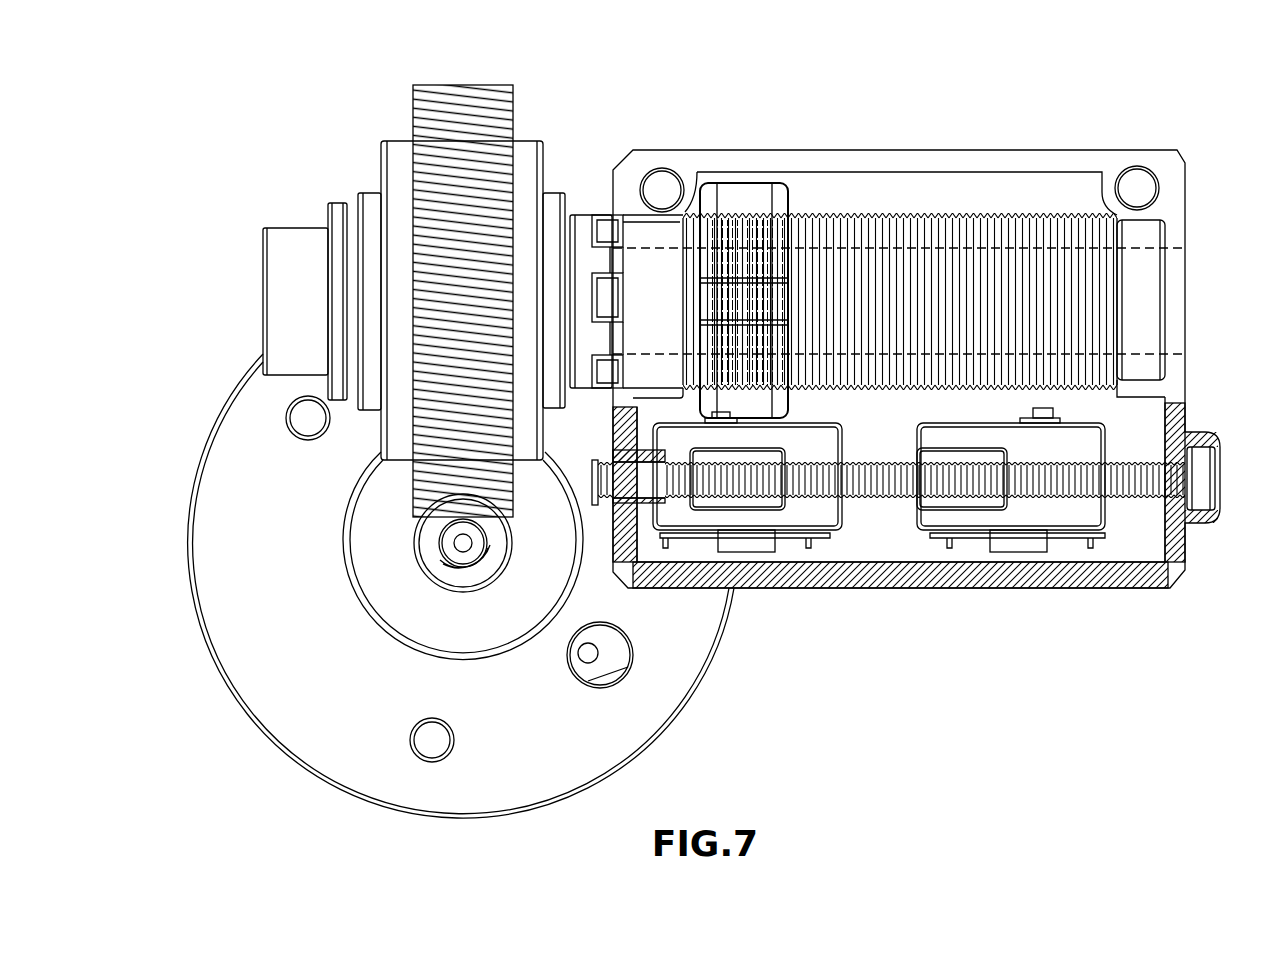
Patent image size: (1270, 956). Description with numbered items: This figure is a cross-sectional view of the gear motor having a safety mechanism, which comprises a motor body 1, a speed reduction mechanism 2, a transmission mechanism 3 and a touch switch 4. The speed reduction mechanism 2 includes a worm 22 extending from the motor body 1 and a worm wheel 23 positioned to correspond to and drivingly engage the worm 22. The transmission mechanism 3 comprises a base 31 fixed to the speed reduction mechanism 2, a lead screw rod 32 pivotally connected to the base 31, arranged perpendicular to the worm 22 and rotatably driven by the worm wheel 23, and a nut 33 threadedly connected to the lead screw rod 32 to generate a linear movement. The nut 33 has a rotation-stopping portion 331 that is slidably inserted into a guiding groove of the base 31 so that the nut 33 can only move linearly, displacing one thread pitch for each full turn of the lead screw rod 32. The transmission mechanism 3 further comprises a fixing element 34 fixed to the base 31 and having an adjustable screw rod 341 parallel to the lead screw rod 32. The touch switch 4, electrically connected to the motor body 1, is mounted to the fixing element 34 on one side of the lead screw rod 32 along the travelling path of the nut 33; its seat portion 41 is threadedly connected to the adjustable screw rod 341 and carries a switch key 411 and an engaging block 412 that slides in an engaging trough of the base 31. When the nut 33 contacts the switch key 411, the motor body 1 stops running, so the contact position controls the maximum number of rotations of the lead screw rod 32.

The motor body 1 is at (217, 638).
The speed reduction mechanism 2 is at (439, 429).
The worm 22 is at (437, 565).
The worm wheel 23 is at (412, 120).
The transmission mechanism 3 is at (888, 244).
The base 31 is at (898, 152).
The lead screw rod 32 is at (875, 213).
The nut 33 is at (723, 244).
The rotation-stopping portion 331 is at (745, 278).
The fixing element 34 is at (1150, 506).
The adjustable screw rod 341 is at (1118, 497).
The touch switch 4 is at (930, 514).
The seat portion 41 is at (1023, 520).
The switch key 411 is at (1048, 412).
The engaging block 412 is at (966, 503).